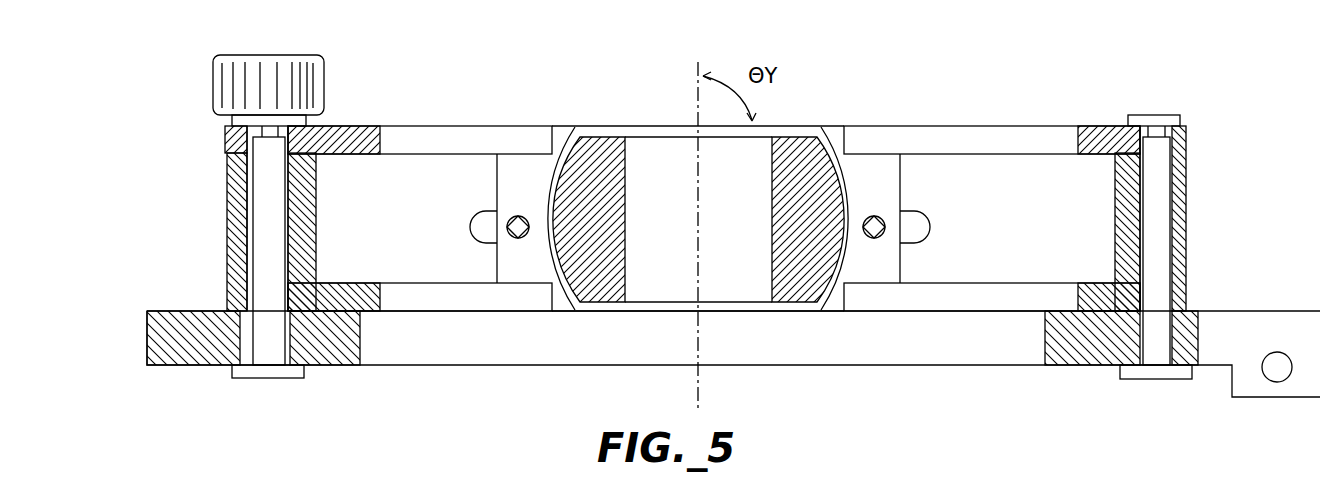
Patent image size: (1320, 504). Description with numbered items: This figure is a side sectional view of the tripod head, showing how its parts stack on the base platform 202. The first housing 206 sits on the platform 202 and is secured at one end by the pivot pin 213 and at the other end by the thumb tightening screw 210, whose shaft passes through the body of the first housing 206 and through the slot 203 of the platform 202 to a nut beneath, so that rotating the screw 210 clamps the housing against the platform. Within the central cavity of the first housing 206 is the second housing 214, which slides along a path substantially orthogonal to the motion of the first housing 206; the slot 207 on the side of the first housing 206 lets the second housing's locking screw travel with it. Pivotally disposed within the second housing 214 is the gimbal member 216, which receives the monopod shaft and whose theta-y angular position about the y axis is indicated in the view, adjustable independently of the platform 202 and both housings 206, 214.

The base platform 202 is at (205, 370).
The slot 203 is at (292, 358).
The first housing 206 is at (228, 260).
The slot 207 is at (908, 218).
The thumb tightening screw 210 is at (272, 68).
The pivot pin 213 is at (1150, 118).
The second housing 214 is at (562, 130).
The gimbal member 216 is at (795, 150).